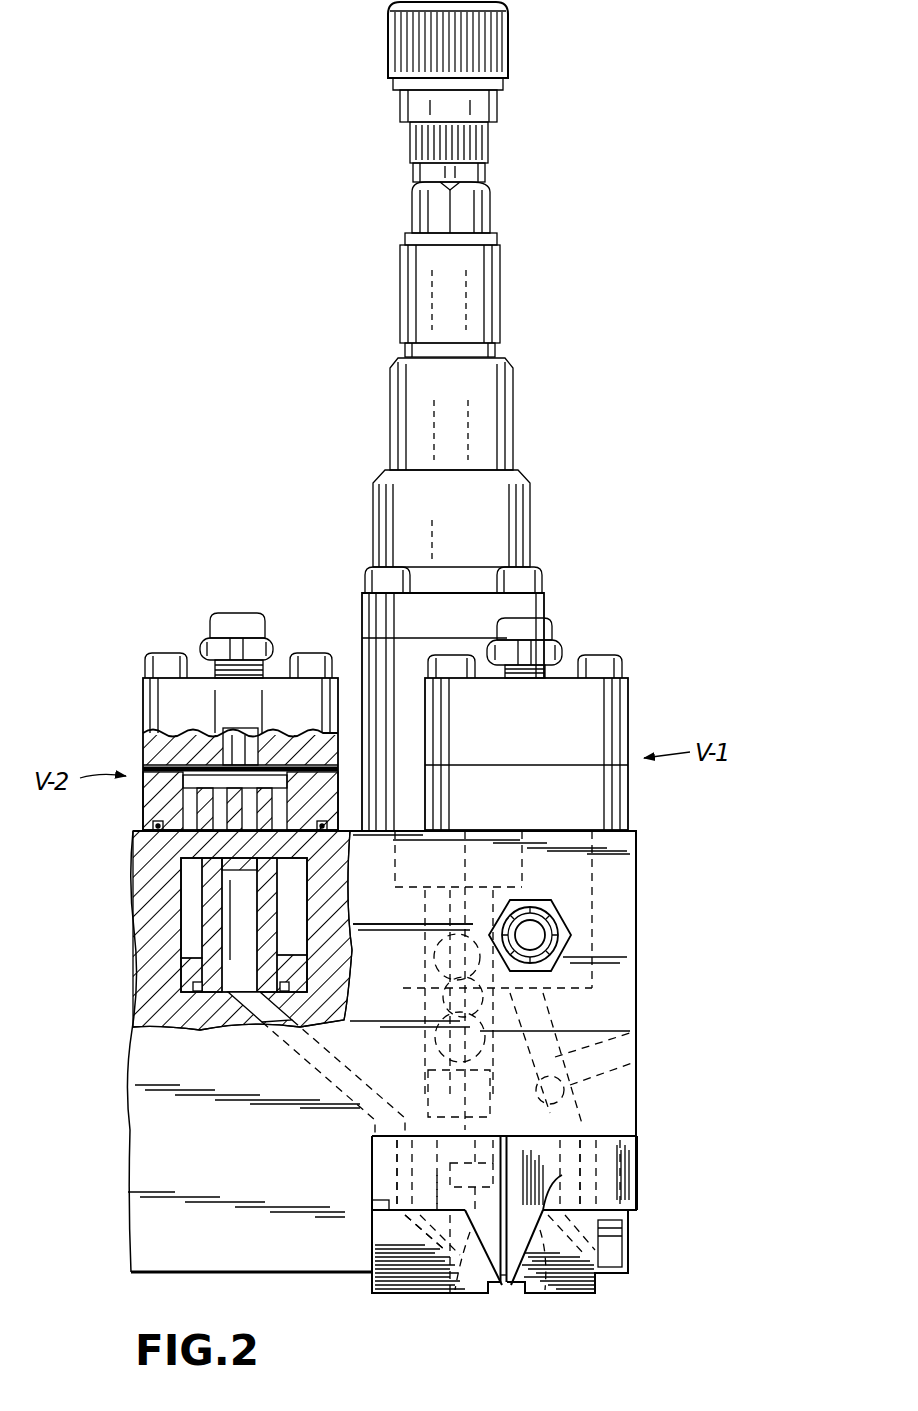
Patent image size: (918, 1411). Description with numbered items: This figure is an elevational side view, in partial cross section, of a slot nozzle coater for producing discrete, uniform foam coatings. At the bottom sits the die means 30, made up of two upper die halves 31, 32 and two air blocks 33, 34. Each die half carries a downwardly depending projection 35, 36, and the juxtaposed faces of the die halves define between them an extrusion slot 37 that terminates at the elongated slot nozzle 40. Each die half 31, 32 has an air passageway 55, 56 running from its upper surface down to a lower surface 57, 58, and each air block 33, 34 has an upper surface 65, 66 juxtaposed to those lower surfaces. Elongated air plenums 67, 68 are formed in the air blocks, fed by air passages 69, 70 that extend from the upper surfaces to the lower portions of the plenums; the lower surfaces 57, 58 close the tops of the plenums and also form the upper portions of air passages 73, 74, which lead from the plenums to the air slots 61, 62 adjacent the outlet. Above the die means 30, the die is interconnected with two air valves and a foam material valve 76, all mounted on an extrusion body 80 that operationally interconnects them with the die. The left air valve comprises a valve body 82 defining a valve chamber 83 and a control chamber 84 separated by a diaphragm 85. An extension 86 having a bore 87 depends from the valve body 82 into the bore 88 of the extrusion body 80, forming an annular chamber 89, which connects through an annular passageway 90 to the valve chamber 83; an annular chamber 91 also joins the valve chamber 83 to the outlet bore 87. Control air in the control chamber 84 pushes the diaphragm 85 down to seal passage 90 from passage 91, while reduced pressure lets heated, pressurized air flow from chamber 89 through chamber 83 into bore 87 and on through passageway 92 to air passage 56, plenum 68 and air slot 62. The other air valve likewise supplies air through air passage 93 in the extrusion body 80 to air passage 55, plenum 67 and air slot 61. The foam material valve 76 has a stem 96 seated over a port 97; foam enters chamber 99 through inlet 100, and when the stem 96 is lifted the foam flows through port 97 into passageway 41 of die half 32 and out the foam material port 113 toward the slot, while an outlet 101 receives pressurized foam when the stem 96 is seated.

The die means 30 is at (700, 1172).
The die half 31 is at (625, 1145).
The die half 32 is at (372, 1186).
The air block 33 is at (580, 1292).
The air block 34 is at (400, 1295).
The downwardly depending projection 35 is at (559, 1188).
The downwardly depending projection 36 is at (479, 1295).
The extrusion slot 37 is at (538, 1297).
The slot nozzle 40 is at (505, 1292).
The passageway 41 is at (437, 1192).
The air passageway 55 is at (622, 1175).
The air passageway 56 is at (372, 1157).
The lower surface 57 is at (626, 1195).
The lower surface 58 is at (375, 1206).
The air slot 61 is at (600, 1290).
The air slot 62 is at (450, 1296).
The upper surface 65 is at (632, 1215).
The upper surface 66 is at (375, 1232).
The air plenum 67 is at (625, 1262).
The air plenum 68 is at (458, 1255).
The air passage 69 is at (625, 1250).
The air passage 70 is at (378, 1291).
The air passage 73 is at (572, 1172).
The air passage 74 is at (472, 1199).
The foam material valve 76 is at (533, 508).
The extrusion body 80 is at (640, 988).
The valve body 82 is at (552, 815).
The valve chamber 83 is at (288, 780).
The control chamber 84 is at (242, 745).
The diaphragm 85 is at (185, 733).
The extension 86 is at (197, 940).
The bore 87 is at (245, 955).
The bore 88 is at (195, 912).
The annular chamber 89 is at (186, 893).
The annular passageway 90 is at (282, 807).
The annular chamber 91 is at (340, 845).
The passageway 92 is at (272, 1046).
The air passage 93 is at (600, 1038).
The stem 96 is at (442, 993).
The port 97 is at (426, 1097).
The chamber 99 is at (430, 975).
The inlet 100 is at (414, 928).
The outlet 101 is at (435, 1032).
The foam material port 113 is at (544, 1060).